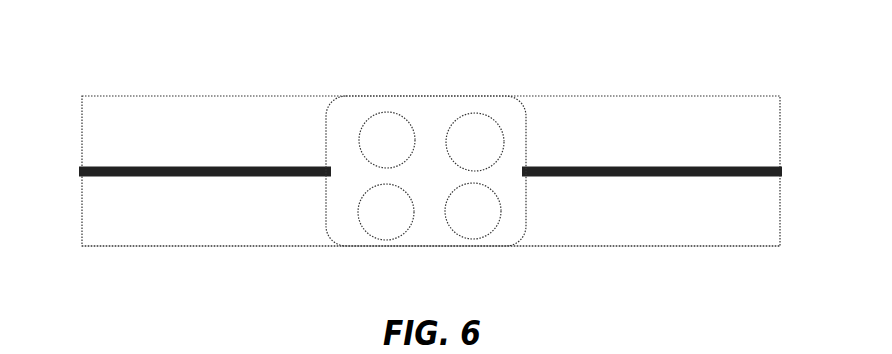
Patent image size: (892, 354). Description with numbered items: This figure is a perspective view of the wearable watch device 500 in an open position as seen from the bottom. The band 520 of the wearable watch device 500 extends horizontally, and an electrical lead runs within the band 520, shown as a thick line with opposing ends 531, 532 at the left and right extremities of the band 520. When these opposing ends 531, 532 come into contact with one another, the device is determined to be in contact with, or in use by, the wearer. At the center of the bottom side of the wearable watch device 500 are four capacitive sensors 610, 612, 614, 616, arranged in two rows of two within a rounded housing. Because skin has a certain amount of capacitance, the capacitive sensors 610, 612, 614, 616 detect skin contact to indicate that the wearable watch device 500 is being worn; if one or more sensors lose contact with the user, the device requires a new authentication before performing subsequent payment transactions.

The wearable watch device 500 is at (444, 175).
The band 520 is at (195, 247).
The opposing end of electrical lead 531 is at (784, 173).
The opposing end of electrical lead 532 is at (78, 172).
The capacitive sensor 610 is at (387, 140).
The capacitive sensor 612 is at (475, 142).
The capacitive sensor 614 is at (386, 212).
The capacitive sensor 616 is at (473, 211).